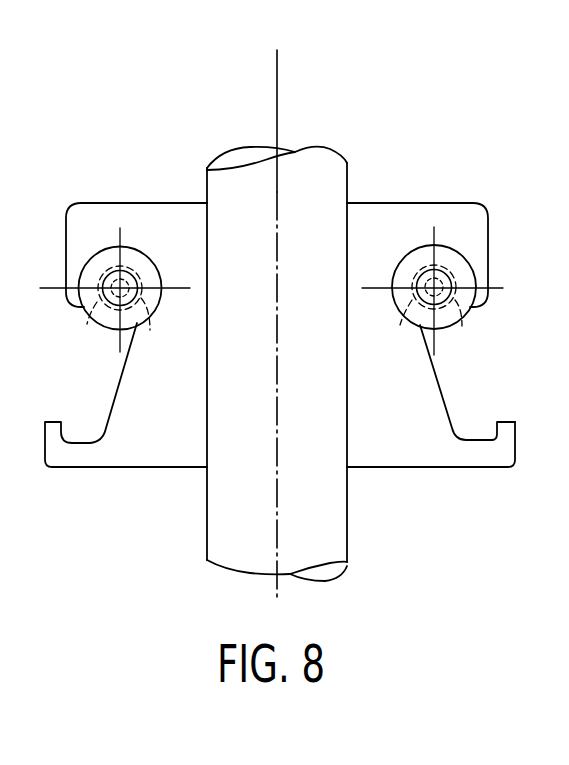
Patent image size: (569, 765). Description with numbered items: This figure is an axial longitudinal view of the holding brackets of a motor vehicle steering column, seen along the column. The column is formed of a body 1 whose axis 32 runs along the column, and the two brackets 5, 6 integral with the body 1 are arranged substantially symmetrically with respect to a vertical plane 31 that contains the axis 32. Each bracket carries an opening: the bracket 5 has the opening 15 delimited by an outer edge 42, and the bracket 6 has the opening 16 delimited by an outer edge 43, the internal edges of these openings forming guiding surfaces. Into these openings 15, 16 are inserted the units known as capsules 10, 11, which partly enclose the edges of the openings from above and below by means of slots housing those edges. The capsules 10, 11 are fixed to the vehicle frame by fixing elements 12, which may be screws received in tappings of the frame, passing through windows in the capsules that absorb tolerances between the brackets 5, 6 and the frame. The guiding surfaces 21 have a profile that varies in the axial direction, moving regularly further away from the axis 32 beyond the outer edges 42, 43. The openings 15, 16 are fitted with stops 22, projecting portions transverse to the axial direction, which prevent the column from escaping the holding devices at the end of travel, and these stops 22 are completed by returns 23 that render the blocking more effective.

The body 1 is at (322, 507).
The bracket 5 is at (468, 232).
The bracket 6 is at (106, 220).
The capsule 10 is at (433, 318).
The capsule 11 is at (103, 315).
The fixing element 12 is at (455, 292).
The opening 15 is at (406, 318).
The opening 16 is at (155, 313).
The guiding surface 21 is at (440, 384).
The stop 22 is at (478, 455).
The return 23 is at (516, 421).
The vertical plane 31 is at (277, 80).
The axis 32 is at (281, 120).
The outer edge 42 is at (480, 268).
The outer edge 43 is at (77, 277).